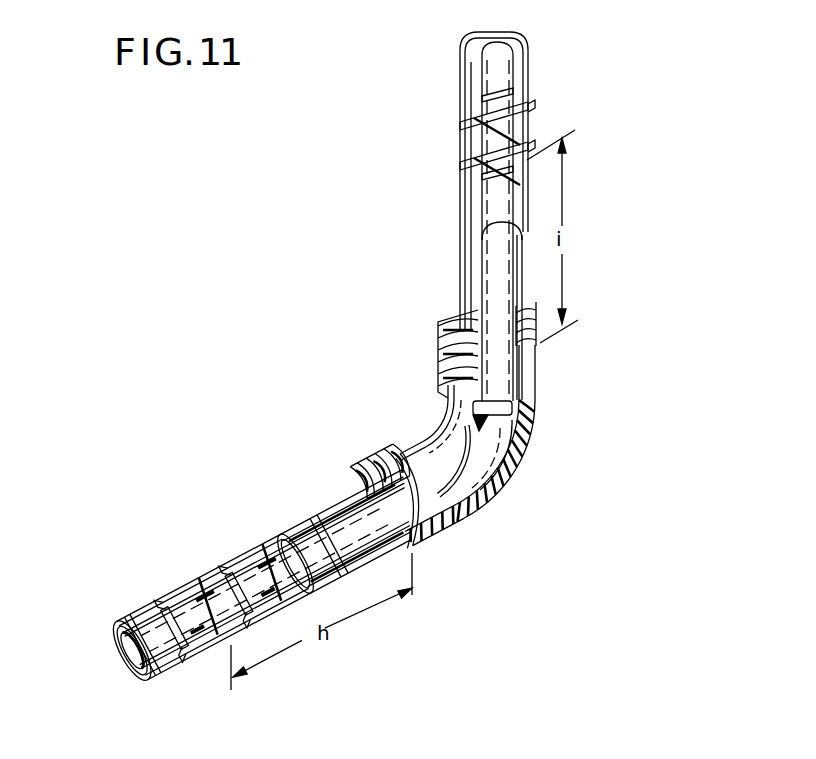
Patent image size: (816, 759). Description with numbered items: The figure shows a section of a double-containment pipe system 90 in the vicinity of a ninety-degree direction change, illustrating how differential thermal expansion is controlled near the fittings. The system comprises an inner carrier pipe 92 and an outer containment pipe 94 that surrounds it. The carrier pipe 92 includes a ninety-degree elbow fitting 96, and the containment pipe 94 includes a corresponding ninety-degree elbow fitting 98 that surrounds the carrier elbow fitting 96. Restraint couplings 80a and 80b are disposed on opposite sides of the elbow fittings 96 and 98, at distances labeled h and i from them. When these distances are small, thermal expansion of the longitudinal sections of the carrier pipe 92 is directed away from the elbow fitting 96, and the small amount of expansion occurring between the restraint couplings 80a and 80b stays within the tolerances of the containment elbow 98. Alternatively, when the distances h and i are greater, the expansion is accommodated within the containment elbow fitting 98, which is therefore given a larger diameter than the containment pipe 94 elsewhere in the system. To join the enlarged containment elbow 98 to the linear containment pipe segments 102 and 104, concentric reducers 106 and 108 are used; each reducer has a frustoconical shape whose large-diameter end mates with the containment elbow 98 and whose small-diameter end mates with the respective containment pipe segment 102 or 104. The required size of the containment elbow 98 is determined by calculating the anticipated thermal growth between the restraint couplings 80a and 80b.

The system 90 is at (558, 433).
The restraint coupling 80a is at (197, 580).
The restraint coupling 80b is at (460, 150).
The carrier pipe 92 is at (121, 660).
The containment pipe 94 is at (138, 619).
The elbow fitting 96 is at (481, 452).
The elbow fitting 98 is at (478, 517).
The linear containment pipe segment 102 is at (310, 520).
The linear containment pipe segment 104 is at (460, 273).
The concentric reducer 106 is at (367, 470).
The concentric reducer 108 is at (443, 340).